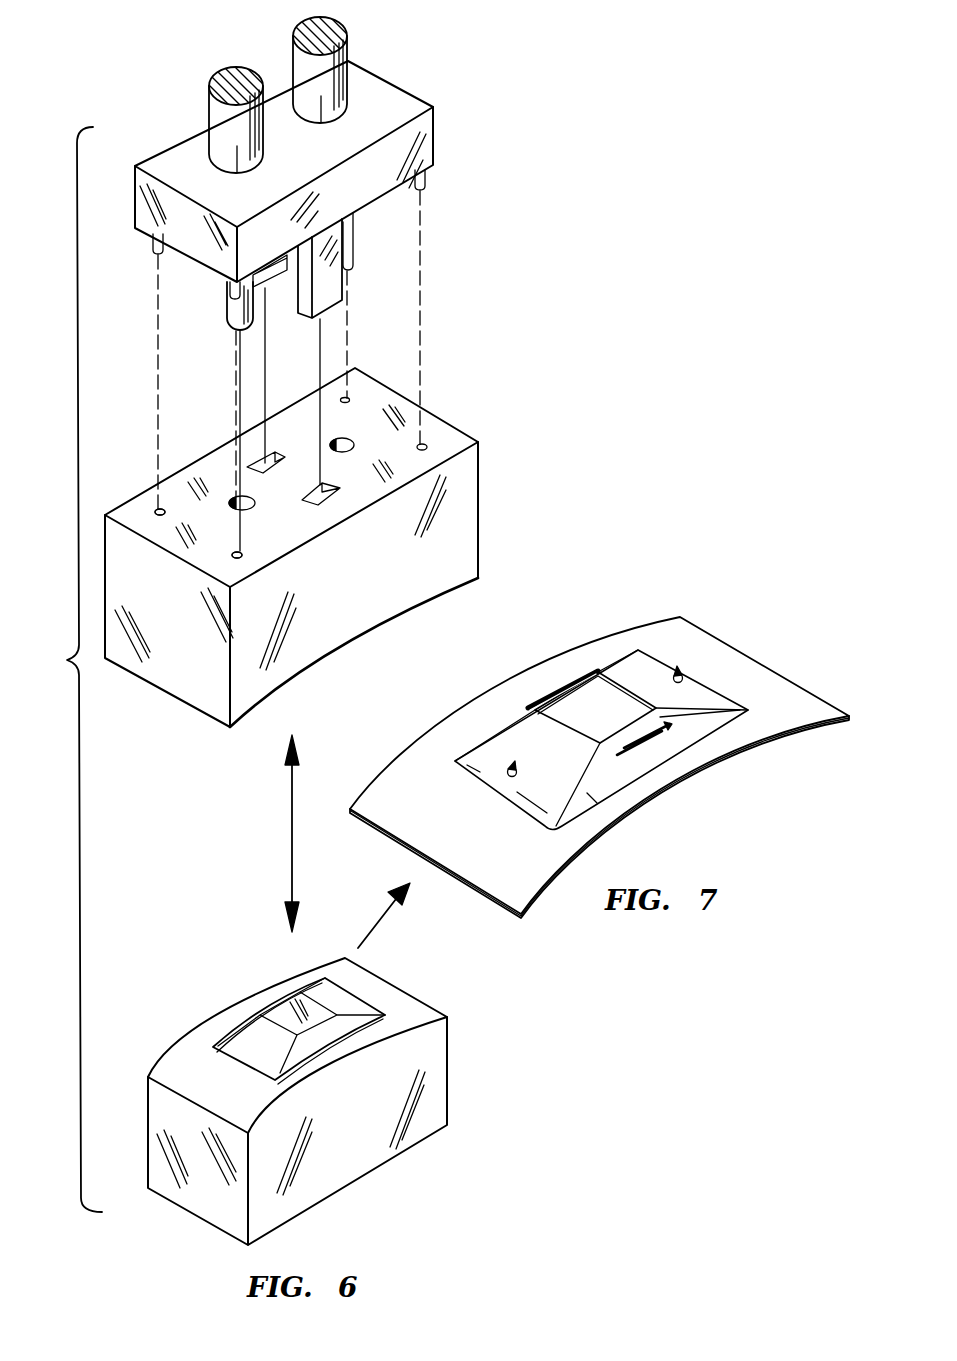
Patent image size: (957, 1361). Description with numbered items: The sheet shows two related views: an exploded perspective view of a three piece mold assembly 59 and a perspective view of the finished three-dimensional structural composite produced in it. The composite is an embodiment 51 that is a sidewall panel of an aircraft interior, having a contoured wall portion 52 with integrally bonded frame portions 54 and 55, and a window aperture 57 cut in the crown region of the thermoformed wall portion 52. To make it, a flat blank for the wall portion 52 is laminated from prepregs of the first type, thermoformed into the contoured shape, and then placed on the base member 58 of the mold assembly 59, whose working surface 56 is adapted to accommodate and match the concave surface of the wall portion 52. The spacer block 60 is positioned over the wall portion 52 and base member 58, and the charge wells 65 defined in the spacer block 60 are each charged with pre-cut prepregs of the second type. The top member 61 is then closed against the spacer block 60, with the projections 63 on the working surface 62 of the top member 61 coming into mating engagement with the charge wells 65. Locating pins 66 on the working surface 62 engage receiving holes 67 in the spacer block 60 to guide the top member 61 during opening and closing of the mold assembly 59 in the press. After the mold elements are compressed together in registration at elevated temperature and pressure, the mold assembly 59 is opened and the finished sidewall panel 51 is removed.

In FIG. 7, the sidewall panel 51 is at (707, 590).
In FIG. 7, the wall portion 52 is at (658, 636).
In FIG. 7, the frame portion 54 is at (511, 782).
In FIG. 7, the frame portion 55 is at (533, 710).
In FIG. 6, the working surface 56 is at (340, 1003).
In FIG. 7, the window aperture 57 is at (599, 691).
In FIG. 6, the base member 58 is at (178, 1063).
In FIG. 6, the mold assembly 59 is at (66, 669).
In FIG. 6, the spacer block 60 is at (470, 477).
In FIG. 6, the top member 61 is at (425, 137).
In FIG. 6, the working surface 62 is at (190, 261).
In FIG. 6, the projections 63 is at (343, 283).
In FIG. 6, the charge wells 65 is at (346, 452).
In FIG. 6, the locating pins 66 is at (428, 177).
In FIG. 6, the receiving holes 67 is at (237, 559).